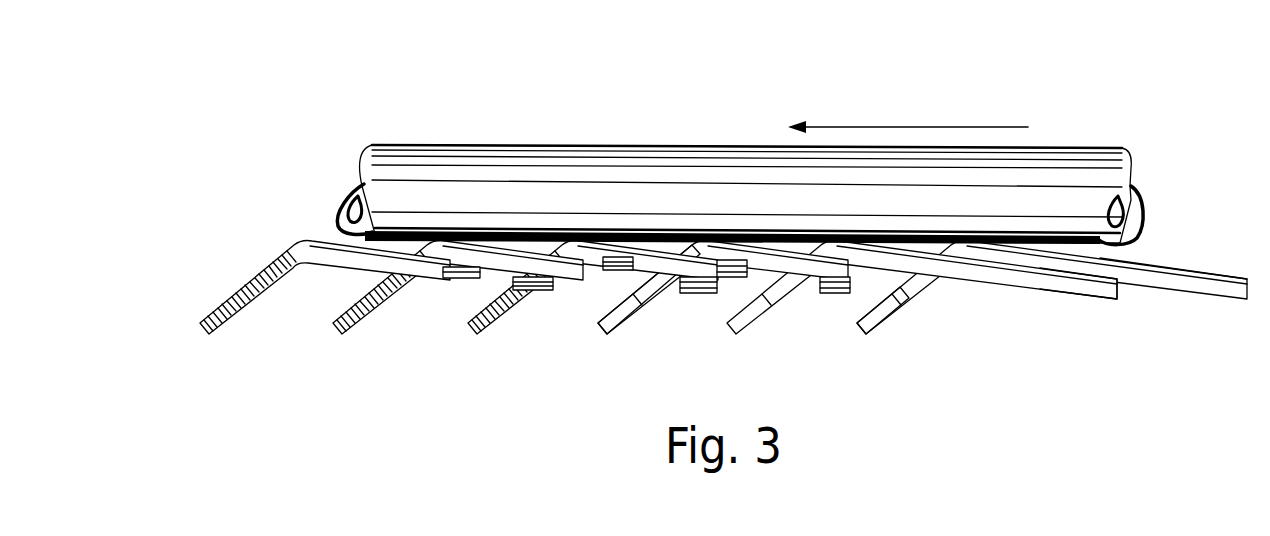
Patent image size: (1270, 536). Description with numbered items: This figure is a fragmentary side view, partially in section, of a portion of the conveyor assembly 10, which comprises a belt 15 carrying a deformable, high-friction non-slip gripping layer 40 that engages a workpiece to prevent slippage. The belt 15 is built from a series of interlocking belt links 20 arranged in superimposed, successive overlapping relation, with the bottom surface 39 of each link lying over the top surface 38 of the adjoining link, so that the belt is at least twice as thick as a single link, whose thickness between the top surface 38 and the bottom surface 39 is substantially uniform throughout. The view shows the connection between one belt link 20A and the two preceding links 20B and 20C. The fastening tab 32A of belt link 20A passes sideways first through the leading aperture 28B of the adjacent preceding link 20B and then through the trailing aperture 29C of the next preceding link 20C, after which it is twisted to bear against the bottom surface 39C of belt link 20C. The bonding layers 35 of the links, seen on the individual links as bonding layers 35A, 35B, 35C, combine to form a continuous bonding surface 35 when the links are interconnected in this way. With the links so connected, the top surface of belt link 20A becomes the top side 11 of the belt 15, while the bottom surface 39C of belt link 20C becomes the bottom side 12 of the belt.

The conveyor assembly 10 is at (1064, 108).
The top side 11 is at (1107, 257).
The bottom side 12 is at (1060, 285).
The belt 15 is at (594, 328).
The belt link 20 is at (1052, 285).
The belt link 20A is at (922, 311).
The adjacent preceding belt link 20B is at (560, 316).
The next preceding belt link 20C is at (419, 316).
The leading aperture 28B is at (655, 262).
The trailing aperture 29C is at (680, 288).
The fastening tab 32A is at (613, 313).
The bonding surface 35 is at (220, 297).
The slat leg 35A is at (950, 272).
The hatched slat leg 35B is at (487, 288).
The hatched slat leg 35C is at (333, 300).
The top surface 38 is at (1200, 271).
The bottom surface 39 is at (1178, 288).
The bottom surface 39C is at (666, 323).
The non-slip gripping layer 40 is at (763, 166).